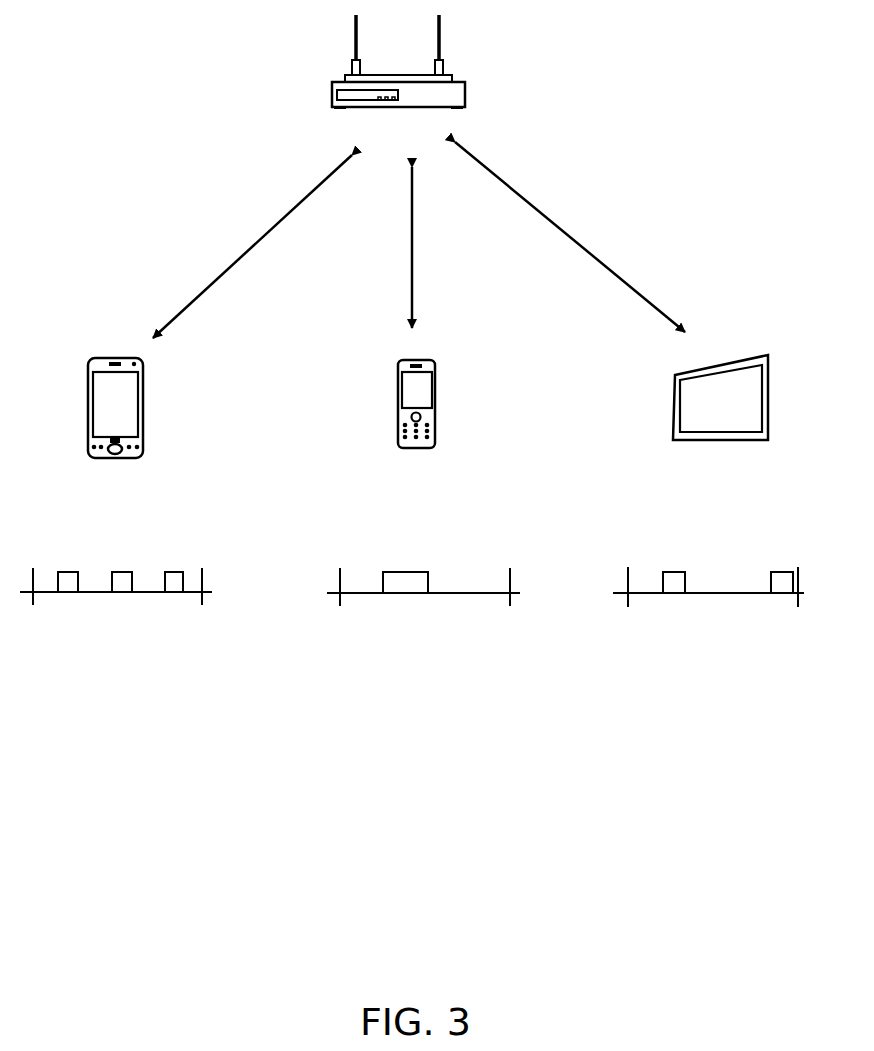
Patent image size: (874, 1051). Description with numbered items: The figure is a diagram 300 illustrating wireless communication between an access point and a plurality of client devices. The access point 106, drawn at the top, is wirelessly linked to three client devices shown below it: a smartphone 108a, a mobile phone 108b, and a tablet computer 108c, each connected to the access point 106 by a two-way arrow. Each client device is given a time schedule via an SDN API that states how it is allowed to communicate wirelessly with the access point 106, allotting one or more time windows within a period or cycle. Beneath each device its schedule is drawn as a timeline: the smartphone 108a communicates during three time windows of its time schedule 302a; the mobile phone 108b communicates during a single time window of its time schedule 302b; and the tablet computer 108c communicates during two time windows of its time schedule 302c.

The time-division multiplexed communication system diagram 300 is at (432, 992).
The access point 106 is at (467, 86).
The smartphone 108a is at (145, 393).
The mobile phone 108b is at (437, 392).
The tablet computer 108c is at (770, 385).
The time schedule 302a is at (208, 603).
The time schedule 302b is at (518, 603).
The time schedule 302c is at (801, 603).